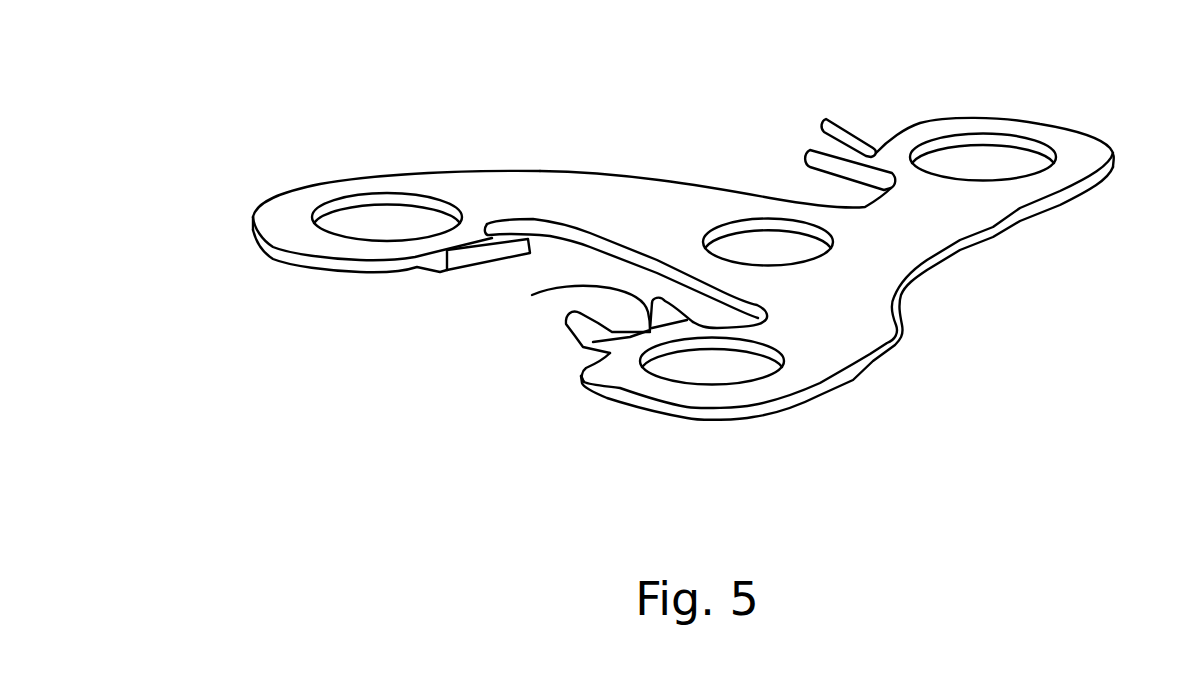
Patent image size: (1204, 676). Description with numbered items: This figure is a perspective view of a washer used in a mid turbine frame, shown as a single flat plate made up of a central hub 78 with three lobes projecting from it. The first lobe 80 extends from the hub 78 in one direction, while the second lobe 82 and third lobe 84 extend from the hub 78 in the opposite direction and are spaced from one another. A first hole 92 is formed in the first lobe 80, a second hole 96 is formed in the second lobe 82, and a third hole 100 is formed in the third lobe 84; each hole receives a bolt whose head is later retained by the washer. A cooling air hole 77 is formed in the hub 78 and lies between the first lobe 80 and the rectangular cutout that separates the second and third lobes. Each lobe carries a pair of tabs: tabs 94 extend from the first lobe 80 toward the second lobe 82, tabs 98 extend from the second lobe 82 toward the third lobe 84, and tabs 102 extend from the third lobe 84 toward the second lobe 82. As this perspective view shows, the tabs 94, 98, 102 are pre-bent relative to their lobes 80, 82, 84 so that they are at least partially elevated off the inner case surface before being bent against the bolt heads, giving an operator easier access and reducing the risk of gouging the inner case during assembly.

The cooling air hole 77 is at (790, 247).
The hub 78 is at (897, 232).
The first lobe 80 is at (1080, 157).
The second lobe 82 is at (284, 218).
The third lobe 84 is at (767, 390).
The first hole 92 is at (1031, 140).
The tabs 94 is at (820, 150).
The second hole 96 is at (330, 237).
The tabs 98 is at (515, 240).
The third hole 100 is at (717, 385).
The tabs 102 is at (578, 322).